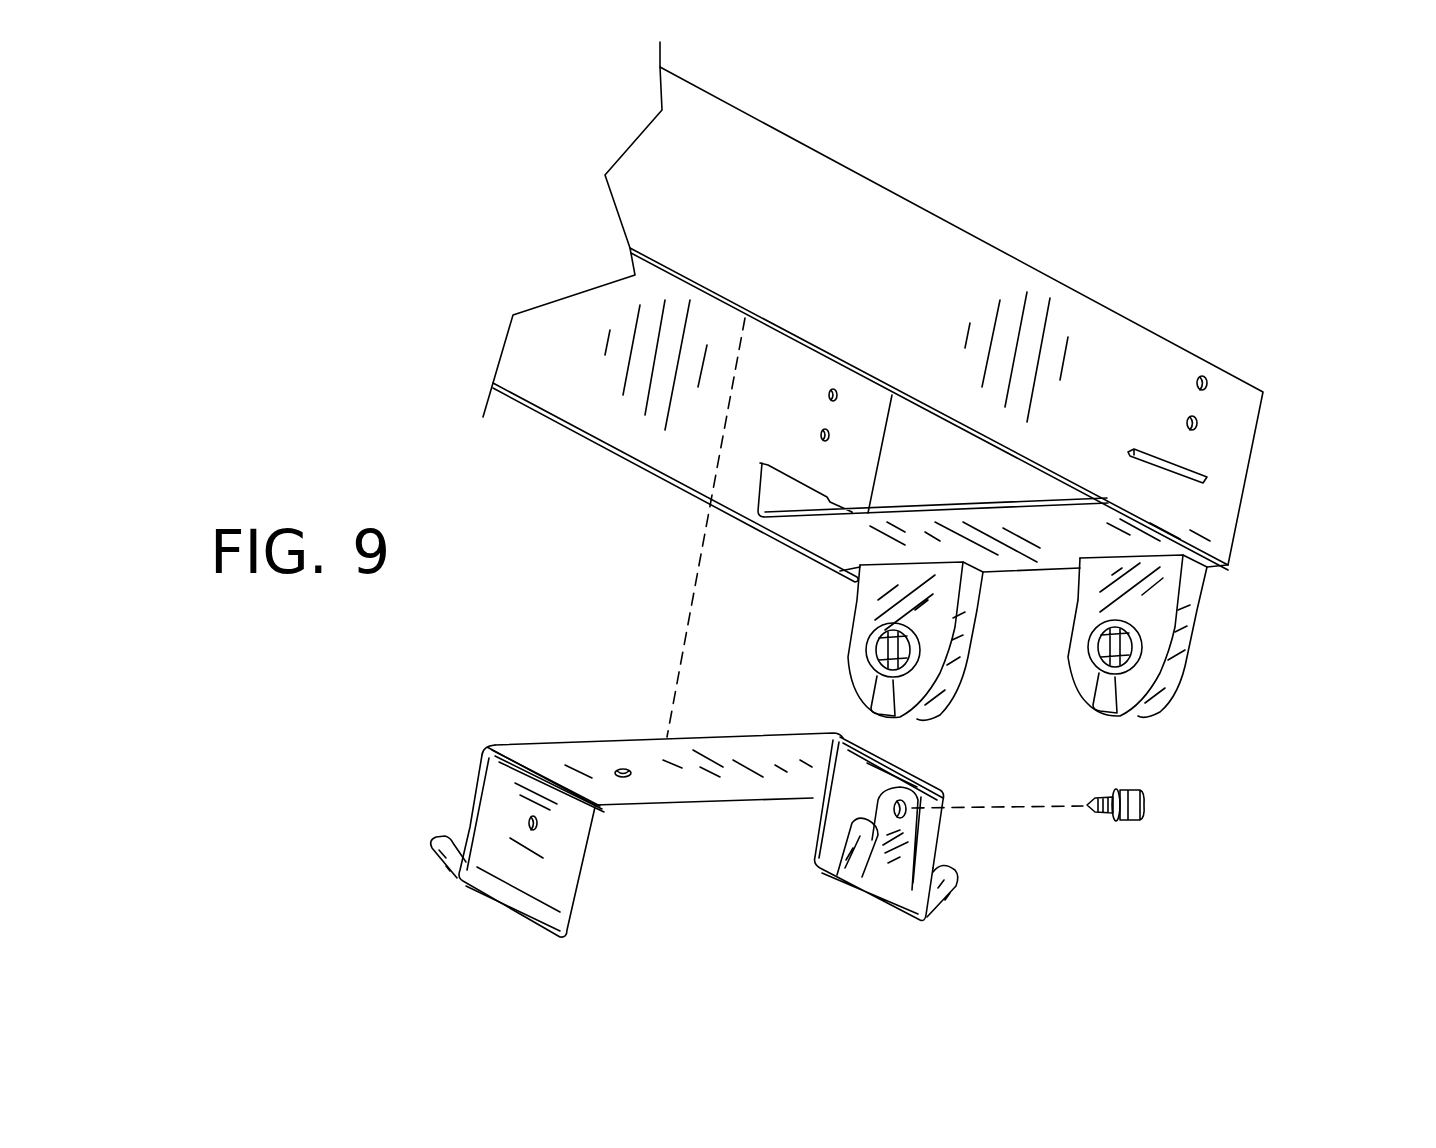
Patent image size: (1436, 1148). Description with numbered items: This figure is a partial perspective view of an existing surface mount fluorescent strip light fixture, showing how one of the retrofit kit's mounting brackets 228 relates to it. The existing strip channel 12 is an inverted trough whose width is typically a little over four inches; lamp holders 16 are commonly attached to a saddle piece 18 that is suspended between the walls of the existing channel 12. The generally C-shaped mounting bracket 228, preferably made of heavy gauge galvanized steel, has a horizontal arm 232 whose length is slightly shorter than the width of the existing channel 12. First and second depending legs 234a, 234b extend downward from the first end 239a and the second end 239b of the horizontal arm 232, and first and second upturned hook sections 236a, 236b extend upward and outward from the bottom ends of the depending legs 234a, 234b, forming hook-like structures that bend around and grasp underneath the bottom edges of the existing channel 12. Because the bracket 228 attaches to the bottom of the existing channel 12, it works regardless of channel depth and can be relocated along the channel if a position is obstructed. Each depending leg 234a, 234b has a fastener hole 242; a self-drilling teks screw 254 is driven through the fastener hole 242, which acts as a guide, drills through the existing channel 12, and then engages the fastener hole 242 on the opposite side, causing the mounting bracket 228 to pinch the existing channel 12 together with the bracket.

The existing strip channel 12 is at (967, 255).
The saddle piece 18 is at (1103, 522).
The lamp holders 16 is at (1093, 642).
The mounting bracket 228 is at (700, 787).
The horizontal arm 232 is at (617, 742).
The first depending leg 234a is at (490, 828).
The second depending leg 234b is at (925, 842).
The first upturned hook section 236a is at (437, 855).
The second upturned hook section 236b is at (856, 845).
The first end 239a is at (537, 767).
The second end 239b is at (855, 740).
The fastener hole 242 is at (532, 815).
The teks screw 254 is at (1143, 803).